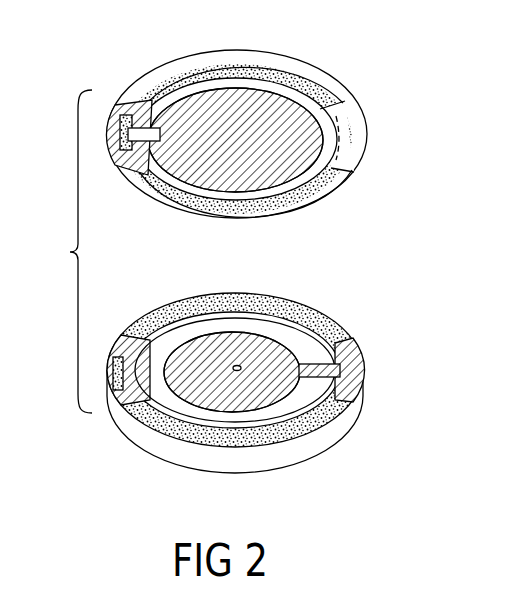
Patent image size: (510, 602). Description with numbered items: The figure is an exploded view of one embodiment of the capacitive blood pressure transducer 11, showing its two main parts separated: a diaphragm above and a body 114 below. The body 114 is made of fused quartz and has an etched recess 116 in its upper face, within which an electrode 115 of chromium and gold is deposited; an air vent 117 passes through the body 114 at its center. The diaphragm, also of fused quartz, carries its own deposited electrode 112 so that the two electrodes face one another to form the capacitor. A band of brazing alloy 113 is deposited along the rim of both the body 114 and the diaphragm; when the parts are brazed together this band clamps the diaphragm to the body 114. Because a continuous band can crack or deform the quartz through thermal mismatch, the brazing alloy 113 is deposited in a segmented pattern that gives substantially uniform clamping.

The transducer 11 is at (72, 251).
The electrode 112 is at (319, 109).
The brazing alloy band 113 is at (325, 189).
The body 114 is at (328, 446).
The electrode 115 is at (299, 395).
The etched recess 116 is at (311, 351).
The air vent 117 is at (237, 364).